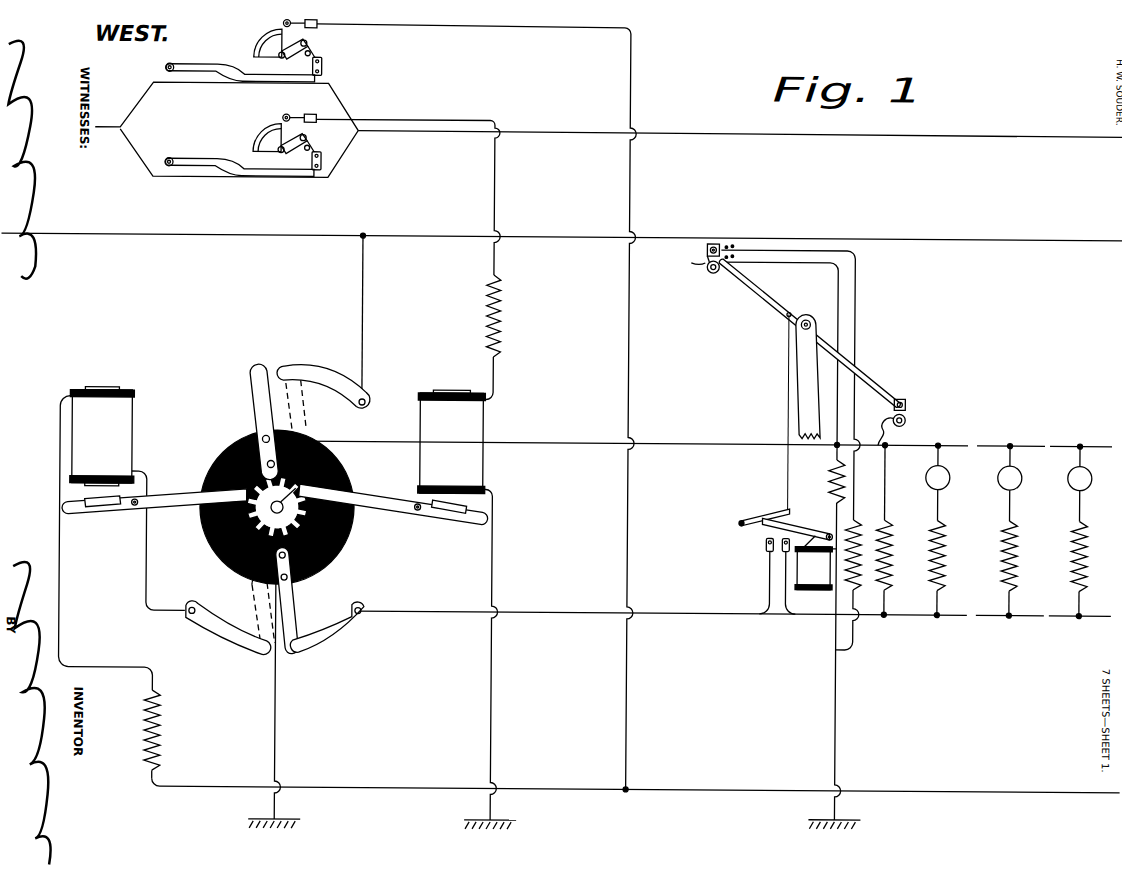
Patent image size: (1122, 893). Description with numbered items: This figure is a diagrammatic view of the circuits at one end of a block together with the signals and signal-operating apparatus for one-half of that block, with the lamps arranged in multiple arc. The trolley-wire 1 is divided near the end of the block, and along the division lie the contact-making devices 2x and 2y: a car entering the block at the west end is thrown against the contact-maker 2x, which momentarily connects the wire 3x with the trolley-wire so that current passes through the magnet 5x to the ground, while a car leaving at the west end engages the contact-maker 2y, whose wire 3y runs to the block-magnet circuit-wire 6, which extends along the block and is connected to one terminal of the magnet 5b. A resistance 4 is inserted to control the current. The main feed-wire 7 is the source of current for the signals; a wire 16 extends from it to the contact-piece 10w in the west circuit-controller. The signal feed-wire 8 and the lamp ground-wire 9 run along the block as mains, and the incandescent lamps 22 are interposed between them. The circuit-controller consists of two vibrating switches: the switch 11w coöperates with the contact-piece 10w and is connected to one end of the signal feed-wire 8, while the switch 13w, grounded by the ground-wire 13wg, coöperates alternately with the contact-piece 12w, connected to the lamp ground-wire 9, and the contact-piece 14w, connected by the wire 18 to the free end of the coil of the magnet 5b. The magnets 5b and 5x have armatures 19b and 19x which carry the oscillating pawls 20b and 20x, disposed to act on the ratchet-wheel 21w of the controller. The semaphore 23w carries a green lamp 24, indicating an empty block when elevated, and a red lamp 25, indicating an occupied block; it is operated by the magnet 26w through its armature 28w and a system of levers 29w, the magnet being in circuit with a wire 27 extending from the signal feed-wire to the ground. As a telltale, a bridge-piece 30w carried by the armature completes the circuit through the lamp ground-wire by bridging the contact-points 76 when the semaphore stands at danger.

The trolley-wire 1 is at (719, 134).
The contact-making device 2x is at (269, 144).
The contact-making device 2y is at (270, 50).
The wire 3x is at (467, 120).
The wire 3y is at (474, 408).
The resistance 4 is at (508, 316).
The electric magnet 5b is at (102, 436).
The electric magnet 5x is at (452, 441).
The block-magnet circuit-wire 6 is at (924, 790).
The main feed-wire 7 is at (957, 239).
The signal feed-wire 8 is at (682, 447).
The lamp ground-wire 9 is at (458, 615).
The contact-piece 10w is at (317, 370).
The vibrating switch 11w is at (256, 418).
The contact-piece 12w is at (333, 628).
The vibrating switch 13w is at (300, 596).
The ground-wire 13wg is at (278, 722).
The contact-piece 14w is at (233, 640).
The wire 16 is at (363, 313).
The wire 18 is at (148, 572).
The armature 19b is at (62, 499).
The armature 19x is at (468, 506).
The oscillating pawl 20b is at (113, 522).
The oscillating pawl 20x is at (402, 512).
The ratchet-wheel 21w is at (372, 487).
The incandescent lamps 22 is at (945, 485).
The semaphore 23w is at (805, 349).
The green lamp 24 is at (756, 382).
The red lamp 25 is at (915, 423).
The magnet 26w is at (813, 590).
The wire 27 is at (838, 698).
The armature 28w is at (800, 553).
The system of levers 29w is at (759, 514).
The bridge-piece 30w is at (741, 523).
The contact-points 76 is at (766, 542).